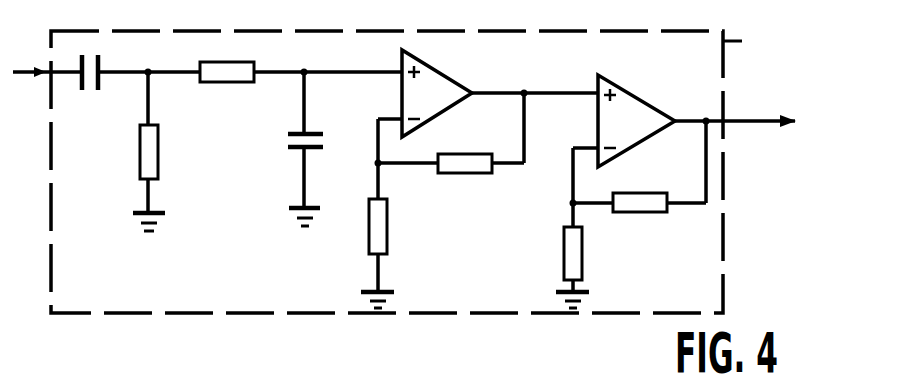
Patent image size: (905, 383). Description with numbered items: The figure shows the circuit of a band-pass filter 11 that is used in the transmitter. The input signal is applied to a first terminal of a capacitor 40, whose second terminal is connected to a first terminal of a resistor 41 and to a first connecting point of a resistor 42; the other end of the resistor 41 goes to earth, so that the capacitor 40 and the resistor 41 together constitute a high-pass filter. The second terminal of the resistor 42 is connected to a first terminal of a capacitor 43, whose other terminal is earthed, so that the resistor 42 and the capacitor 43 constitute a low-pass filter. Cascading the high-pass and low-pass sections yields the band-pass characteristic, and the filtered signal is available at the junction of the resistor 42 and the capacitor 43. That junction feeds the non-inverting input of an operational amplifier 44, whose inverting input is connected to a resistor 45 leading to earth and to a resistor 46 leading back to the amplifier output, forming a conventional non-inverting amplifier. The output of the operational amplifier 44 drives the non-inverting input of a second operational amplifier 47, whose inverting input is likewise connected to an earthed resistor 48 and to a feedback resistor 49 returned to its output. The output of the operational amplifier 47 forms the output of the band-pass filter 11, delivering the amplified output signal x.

The band-pass filter 11 is at (613, 28).
The capacitor 40 is at (100, 78).
The resistor 41 is at (158, 150).
The resistor 42 is at (248, 83).
The capacitor 43 is at (313, 150).
The operational amplifier 44 is at (443, 82).
The resistor 45 is at (386, 226).
The resistor 46 is at (450, 173).
The operational amplifier 47 is at (636, 101).
The resistor 48 is at (580, 252).
The resistor 49 is at (633, 209).